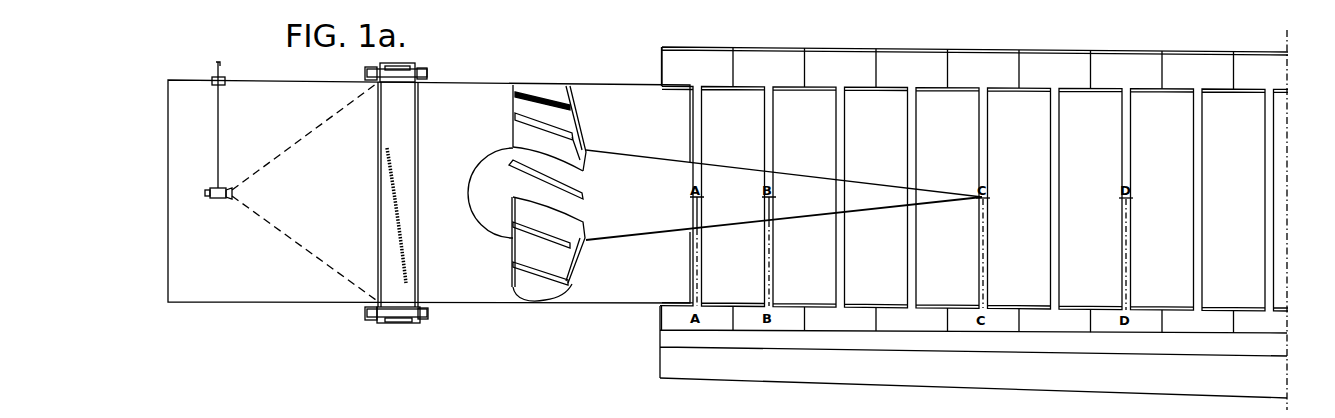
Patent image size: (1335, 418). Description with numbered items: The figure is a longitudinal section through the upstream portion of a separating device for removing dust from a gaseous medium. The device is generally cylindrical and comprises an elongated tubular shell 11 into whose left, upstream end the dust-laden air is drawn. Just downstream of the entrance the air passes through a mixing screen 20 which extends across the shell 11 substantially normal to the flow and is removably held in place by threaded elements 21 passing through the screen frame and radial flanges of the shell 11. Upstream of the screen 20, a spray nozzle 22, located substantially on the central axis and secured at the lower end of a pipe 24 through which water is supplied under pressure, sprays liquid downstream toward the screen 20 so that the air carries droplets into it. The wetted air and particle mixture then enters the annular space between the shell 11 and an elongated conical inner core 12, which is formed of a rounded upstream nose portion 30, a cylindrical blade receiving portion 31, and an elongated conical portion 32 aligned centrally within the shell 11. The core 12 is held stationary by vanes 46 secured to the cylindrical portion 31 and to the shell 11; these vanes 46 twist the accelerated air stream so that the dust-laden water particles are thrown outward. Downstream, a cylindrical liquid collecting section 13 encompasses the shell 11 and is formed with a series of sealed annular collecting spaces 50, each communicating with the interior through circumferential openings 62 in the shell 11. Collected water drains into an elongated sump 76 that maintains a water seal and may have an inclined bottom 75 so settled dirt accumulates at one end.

The tubular shell 11 is at (247, 304).
The conical inner core 12 is at (634, 233).
The liquid collecting section 13 is at (880, 47).
The mixing screen 20 is at (378, 127).
The threaded elements 21 is at (430, 75).
The spray nozzle 22 is at (234, 194).
The pipe 24 is at (213, 69).
The nose portion 30 is at (525, 193).
The cylindrical blade receiving portion 31 is at (588, 212).
The conical portion 32 is at (731, 170).
The vanes 46 is at (520, 127).
The collecting spaces 50 is at (815, 68).
The circumferential openings 62 is at (764, 105).
The inclined bottom 75 is at (1227, 395).
The sump 76 is at (1031, 380).